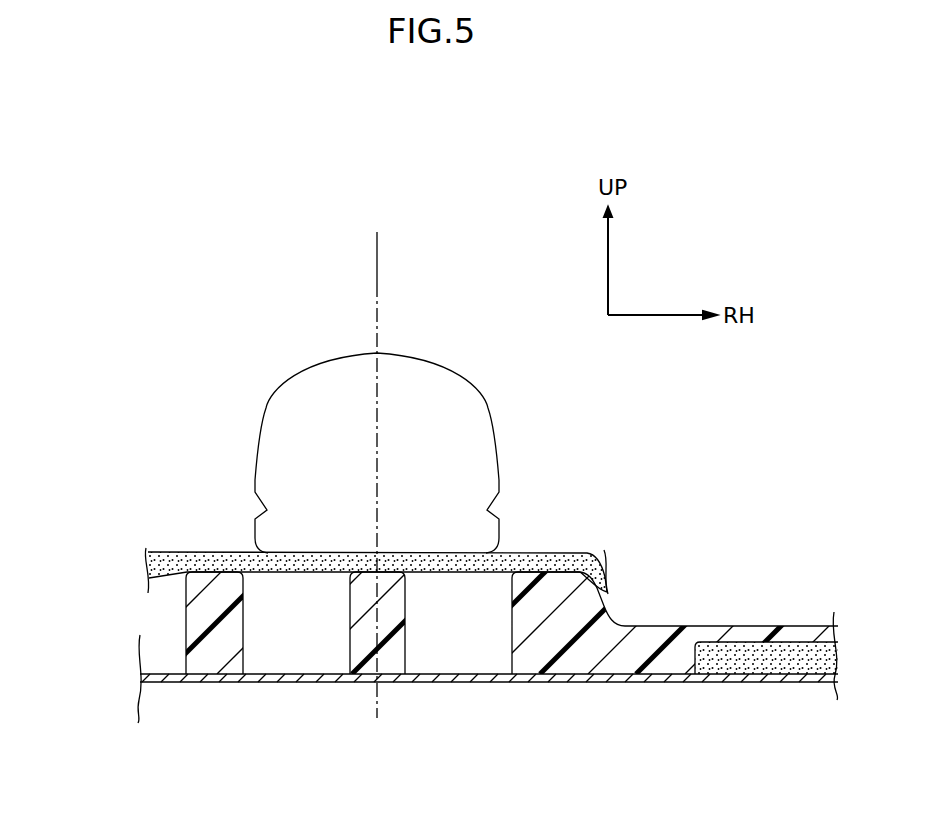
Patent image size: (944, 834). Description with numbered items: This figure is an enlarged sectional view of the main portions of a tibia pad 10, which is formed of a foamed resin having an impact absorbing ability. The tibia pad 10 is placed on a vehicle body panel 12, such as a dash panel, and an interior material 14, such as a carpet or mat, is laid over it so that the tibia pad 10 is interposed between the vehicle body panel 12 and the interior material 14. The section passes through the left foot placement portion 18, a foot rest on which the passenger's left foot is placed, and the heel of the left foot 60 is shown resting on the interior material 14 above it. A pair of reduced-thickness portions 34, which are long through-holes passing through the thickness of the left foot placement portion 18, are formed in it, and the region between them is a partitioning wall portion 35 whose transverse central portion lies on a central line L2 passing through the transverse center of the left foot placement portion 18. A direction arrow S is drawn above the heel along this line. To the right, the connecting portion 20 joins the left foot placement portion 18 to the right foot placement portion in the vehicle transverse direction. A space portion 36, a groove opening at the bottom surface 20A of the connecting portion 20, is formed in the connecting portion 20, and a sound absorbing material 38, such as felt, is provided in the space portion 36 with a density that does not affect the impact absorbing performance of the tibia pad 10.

The tibia pad 10 is at (183, 612).
The vehicle body panel 12 is at (183, 683).
The interior material 14 is at (181, 551).
The left foot placement portion 18 is at (537, 571).
The connecting portion 20 is at (790, 625).
The bottom surface of the connecting portion 20A is at (658, 676).
The reduced-thickness portions 34 is at (243, 633).
The partitioning wall portion 35 is at (350, 638).
The space portion 36 is at (706, 676).
The sound absorbing material 38 is at (768, 660).
The heel of the left foot 60 is at (500, 513).
The pressing direction S is at (372, 181).
The central line L2 is at (378, 281).